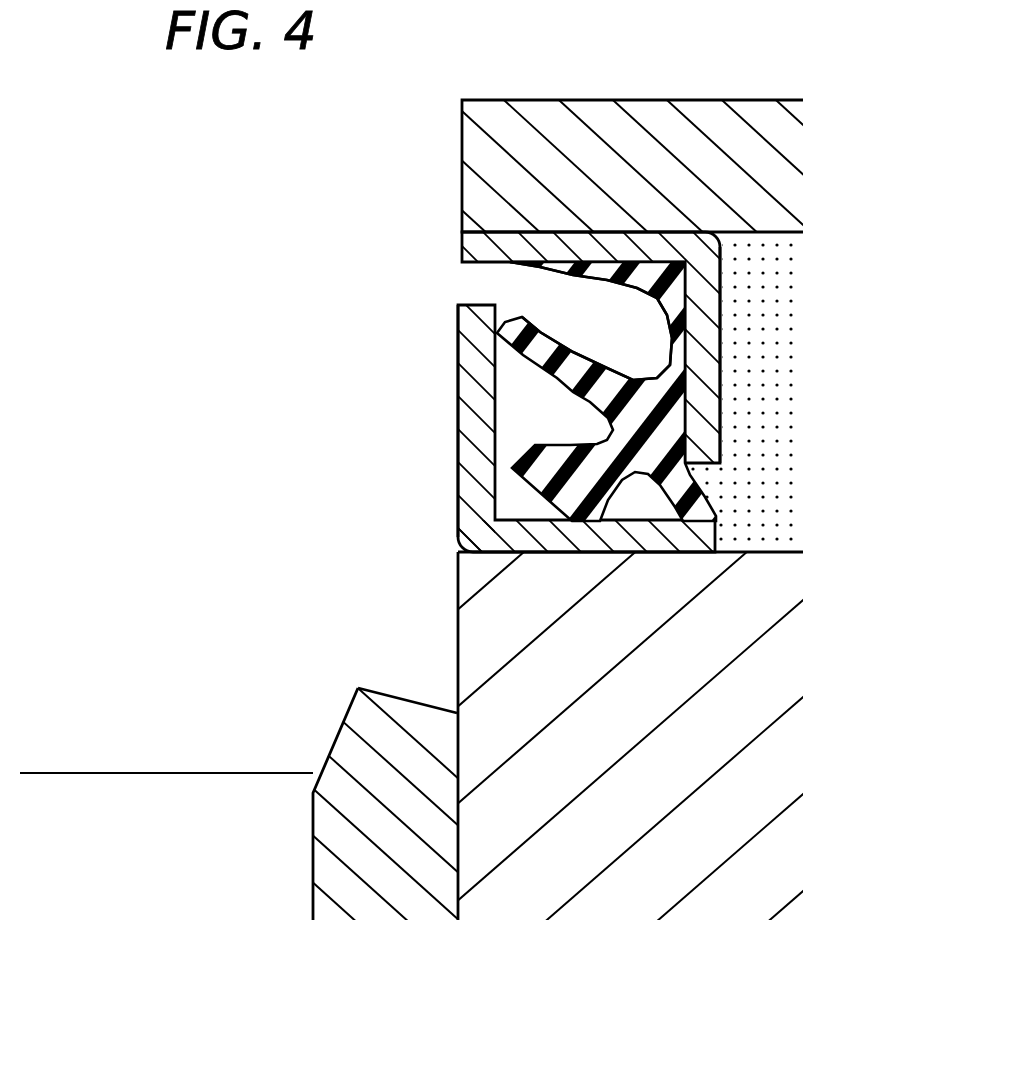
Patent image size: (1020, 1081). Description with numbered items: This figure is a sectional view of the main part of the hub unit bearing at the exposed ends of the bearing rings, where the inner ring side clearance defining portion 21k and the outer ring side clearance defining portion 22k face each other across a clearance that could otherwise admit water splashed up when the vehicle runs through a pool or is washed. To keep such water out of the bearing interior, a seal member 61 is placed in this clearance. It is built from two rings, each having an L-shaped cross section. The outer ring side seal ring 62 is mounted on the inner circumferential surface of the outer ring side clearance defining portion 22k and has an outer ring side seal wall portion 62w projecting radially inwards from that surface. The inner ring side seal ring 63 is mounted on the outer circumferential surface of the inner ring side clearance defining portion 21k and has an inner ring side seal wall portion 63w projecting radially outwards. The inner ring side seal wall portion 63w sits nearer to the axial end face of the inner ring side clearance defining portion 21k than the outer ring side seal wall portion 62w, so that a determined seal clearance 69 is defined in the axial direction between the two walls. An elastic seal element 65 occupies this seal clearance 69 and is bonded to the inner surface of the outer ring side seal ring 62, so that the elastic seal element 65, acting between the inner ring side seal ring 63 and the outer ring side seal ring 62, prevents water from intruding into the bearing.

The inner ring side clearance defining portion 21k is at (750, 672).
The outer ring side clearance defining portion 22k is at (747, 165).
The seal member 61 is at (596, 393).
The outer ring side seal ring 62 is at (670, 332).
The outer ring side seal wall portion 62w is at (724, 318).
The inner ring side seal ring 63 is at (524, 440).
The inner ring side seal wall portion 63w is at (472, 465).
The elastic seal element 65 is at (585, 392).
The seal clearance 69 is at (537, 325).